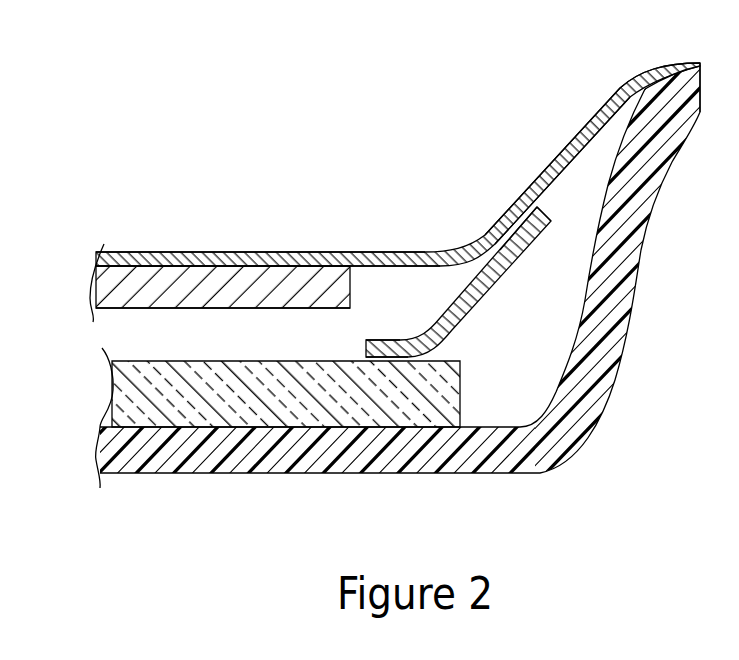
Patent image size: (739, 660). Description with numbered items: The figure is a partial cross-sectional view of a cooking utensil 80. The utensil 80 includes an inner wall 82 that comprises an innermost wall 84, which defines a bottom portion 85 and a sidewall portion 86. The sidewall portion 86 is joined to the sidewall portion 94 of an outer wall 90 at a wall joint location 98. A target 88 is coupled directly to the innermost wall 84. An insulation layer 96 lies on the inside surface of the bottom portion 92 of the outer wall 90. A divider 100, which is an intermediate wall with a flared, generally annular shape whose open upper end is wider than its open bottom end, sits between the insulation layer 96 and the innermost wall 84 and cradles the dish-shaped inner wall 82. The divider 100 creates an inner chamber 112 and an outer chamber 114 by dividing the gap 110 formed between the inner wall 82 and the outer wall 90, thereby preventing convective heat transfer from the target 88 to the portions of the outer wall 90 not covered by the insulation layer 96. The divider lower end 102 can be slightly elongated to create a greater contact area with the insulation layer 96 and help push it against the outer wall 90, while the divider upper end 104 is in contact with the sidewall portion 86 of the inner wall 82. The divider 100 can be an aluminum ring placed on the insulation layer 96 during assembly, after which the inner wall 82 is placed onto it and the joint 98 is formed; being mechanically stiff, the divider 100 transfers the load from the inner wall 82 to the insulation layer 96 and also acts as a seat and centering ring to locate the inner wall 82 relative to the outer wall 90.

The cooking utensil 80 is at (436, 150).
The inner wall 82 is at (318, 242).
The innermost wall 84 is at (412, 250).
The bottom portion 85 is at (202, 252).
The sidewall portion 86 is at (612, 91).
The target 88 is at (166, 290).
The outer wall 90 is at (364, 484).
The bottom portion 92 is at (217, 453).
The sidewall portion 94 is at (650, 193).
The insulation layer 96 is at (113, 386).
The wall joint location 98 is at (698, 61).
The divider 100 is at (494, 285).
The divider lower end 102 is at (375, 340).
The divider upper end 104 is at (533, 212).
The gap 110 is at (588, 192).
The inner chamber 112 is at (137, 335).
The outer chamber 114 is at (520, 383).